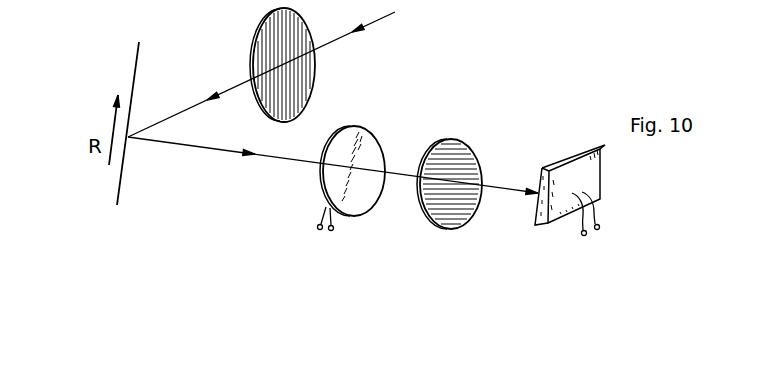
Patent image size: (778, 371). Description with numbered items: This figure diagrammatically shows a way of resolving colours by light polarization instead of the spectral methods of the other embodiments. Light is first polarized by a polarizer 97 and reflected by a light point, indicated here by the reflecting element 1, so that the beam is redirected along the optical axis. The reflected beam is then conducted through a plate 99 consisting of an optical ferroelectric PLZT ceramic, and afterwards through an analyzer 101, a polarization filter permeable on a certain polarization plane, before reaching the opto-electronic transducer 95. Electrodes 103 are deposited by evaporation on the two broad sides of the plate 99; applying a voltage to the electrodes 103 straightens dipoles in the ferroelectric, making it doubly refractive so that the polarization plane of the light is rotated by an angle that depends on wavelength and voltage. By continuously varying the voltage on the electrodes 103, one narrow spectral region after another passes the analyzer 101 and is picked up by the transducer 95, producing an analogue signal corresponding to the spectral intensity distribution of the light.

The mirror 1 is at (120, 193).
The detector 95 is at (570, 180).
The polarizer 97 is at (303, 82).
The plate 99 is at (368, 147).
The analyzer 101 is at (465, 157).
The electrodes 103 is at (329, 221).